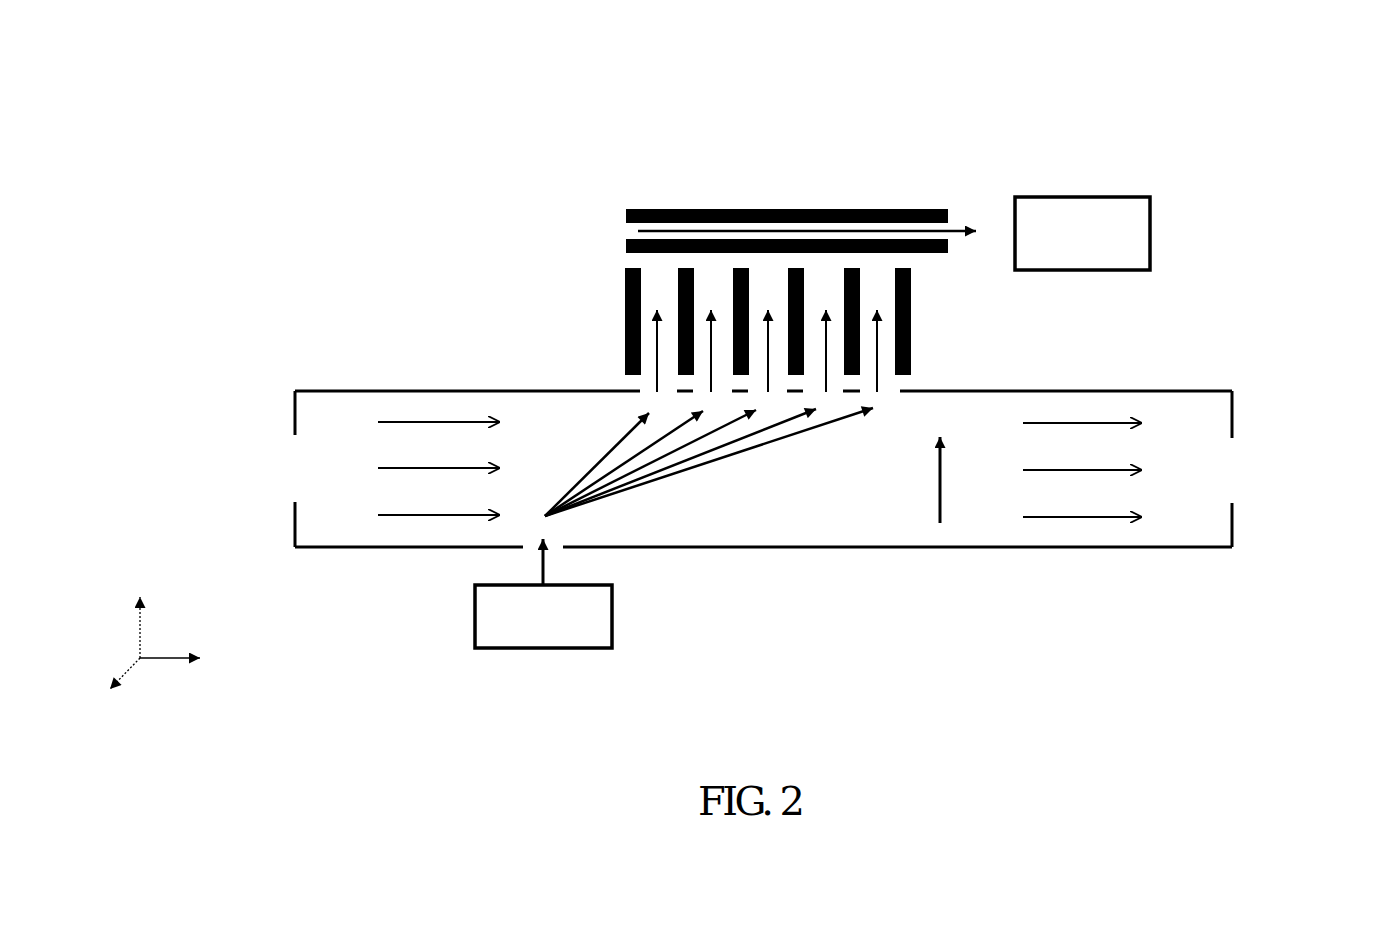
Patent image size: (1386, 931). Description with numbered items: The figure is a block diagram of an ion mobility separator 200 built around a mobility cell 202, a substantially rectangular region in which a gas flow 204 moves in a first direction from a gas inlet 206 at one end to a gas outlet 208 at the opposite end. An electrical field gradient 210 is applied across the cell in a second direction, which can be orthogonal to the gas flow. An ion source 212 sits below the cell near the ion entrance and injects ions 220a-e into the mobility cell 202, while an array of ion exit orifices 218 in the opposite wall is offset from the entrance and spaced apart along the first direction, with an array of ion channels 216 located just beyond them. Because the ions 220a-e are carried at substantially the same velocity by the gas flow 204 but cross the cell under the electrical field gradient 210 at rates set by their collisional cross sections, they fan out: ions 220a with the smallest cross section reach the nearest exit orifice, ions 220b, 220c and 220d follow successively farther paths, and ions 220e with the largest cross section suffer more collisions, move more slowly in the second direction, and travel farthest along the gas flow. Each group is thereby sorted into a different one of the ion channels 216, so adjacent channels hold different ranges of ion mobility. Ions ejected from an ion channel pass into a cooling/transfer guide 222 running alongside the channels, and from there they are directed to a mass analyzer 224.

The ion mobility separator 200 is at (1190, 118).
The mobility cell 202 is at (775, 547).
The gas flow 204 is at (388, 520).
The gas inlet 206 is at (293, 452).
The gas outlet 208 is at (1233, 490).
The electrical field gradient 210 is at (950, 517).
The ion source 212 is at (612, 618).
The array of ion channels 216 is at (912, 345).
The array of ion exit orifices 218 is at (892, 390).
The ions 220a-e is at (538, 557).
The ions with a smaller collisional cross section 220a is at (635, 421).
The ions 220b is at (650, 443).
The ions 220c is at (632, 471).
The ions 220d is at (763, 427).
The ions with a larger collisional cross section 220e is at (817, 429).
The cooling/transfer guide 222 is at (807, 208).
The mass analyzer 224 is at (1105, 270).